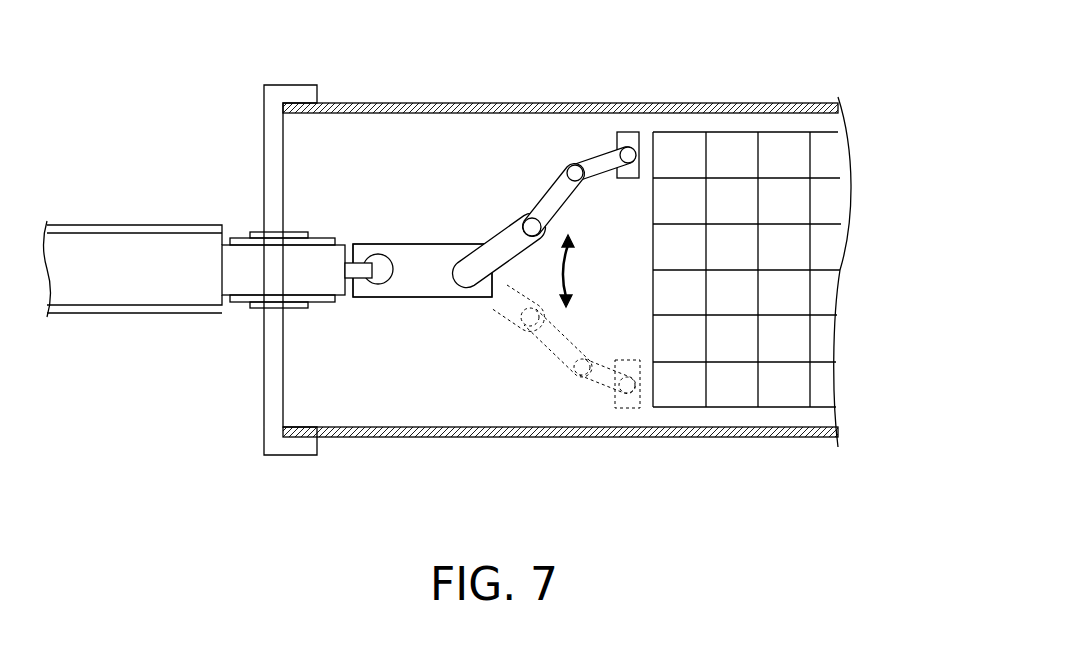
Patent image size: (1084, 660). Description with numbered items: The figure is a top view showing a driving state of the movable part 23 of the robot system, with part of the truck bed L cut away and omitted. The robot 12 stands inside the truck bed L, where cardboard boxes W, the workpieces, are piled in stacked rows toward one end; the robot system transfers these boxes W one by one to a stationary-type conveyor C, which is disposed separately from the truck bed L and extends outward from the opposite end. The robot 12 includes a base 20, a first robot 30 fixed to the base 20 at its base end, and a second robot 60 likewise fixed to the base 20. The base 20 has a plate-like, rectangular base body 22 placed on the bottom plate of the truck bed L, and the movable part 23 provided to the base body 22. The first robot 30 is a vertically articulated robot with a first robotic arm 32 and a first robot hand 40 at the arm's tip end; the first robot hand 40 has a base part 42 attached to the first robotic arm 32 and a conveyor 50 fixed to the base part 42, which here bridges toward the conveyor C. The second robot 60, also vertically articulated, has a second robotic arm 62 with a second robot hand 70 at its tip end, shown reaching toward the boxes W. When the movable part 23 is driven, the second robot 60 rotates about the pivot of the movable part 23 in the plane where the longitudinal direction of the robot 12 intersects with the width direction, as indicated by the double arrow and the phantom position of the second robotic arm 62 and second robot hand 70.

The truck bed L is at (360, 103).
The robot 12 is at (370, 173).
The conveyor C is at (92, 314).
The conveyor 50 is at (248, 233).
The first robot hand 40 is at (324, 237).
The base part 42 is at (256, 306).
The base 20 is at (404, 302).
The base body 22 is at (432, 283).
The first robot 30 is at (349, 205).
The first robotic arm 32 is at (352, 262).
The second robot 60 is at (511, 204).
The second robotic arm 62 is at (598, 157).
The movable part 23 is at (507, 250).
The second robot hand 70 is at (624, 132).
The cardboard box W is at (697, 247).